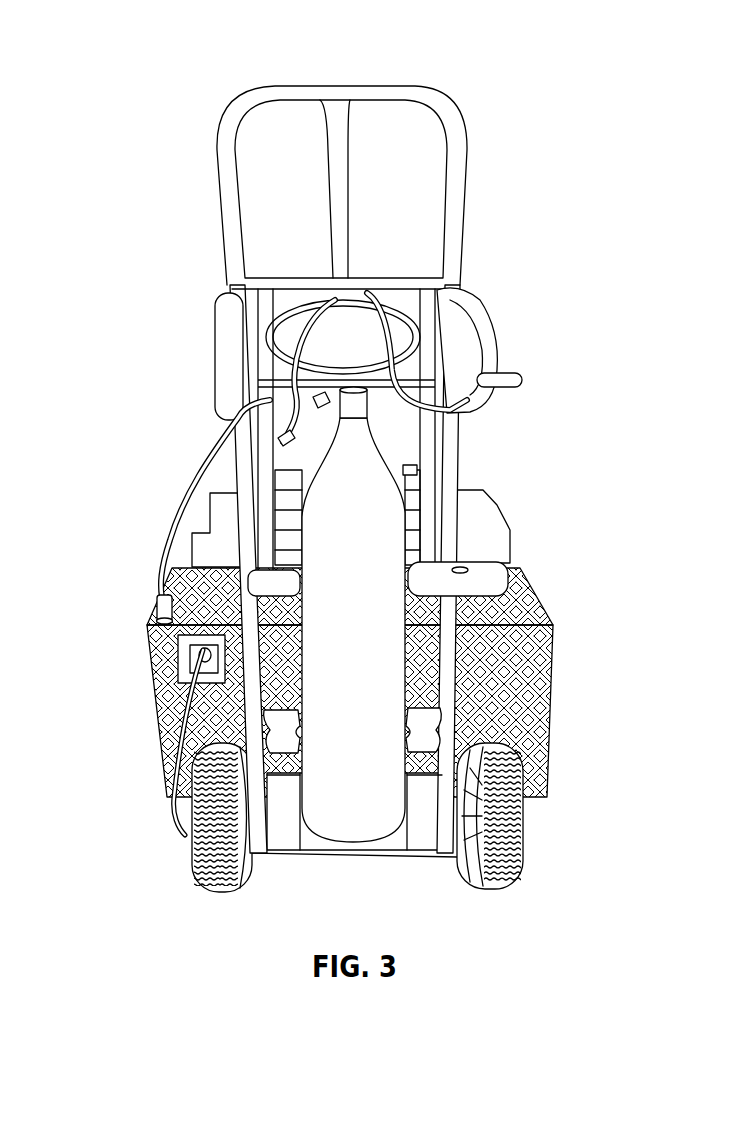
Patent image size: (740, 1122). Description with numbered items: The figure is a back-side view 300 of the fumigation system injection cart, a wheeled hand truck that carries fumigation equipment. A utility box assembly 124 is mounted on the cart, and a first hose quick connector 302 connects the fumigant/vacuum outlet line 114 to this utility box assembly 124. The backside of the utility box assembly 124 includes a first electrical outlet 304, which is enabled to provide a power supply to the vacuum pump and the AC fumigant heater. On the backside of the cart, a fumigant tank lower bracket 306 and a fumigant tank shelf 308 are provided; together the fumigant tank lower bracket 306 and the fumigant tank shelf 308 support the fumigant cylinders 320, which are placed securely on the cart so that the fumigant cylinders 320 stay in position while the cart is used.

The back-side view 300 is at (143, 58).
The fumigant/vacuum outlet line 114 is at (167, 535).
The first hose quick connector 302 is at (157, 605).
The first electrical outlet 304 is at (178, 660).
The fumigant cylinders 320 is at (385, 523).
The utility box assembly 124 is at (553, 647).
The fumigant tank lower bracket 306 is at (440, 718).
The fumigant tank shelf 308 is at (417, 818).